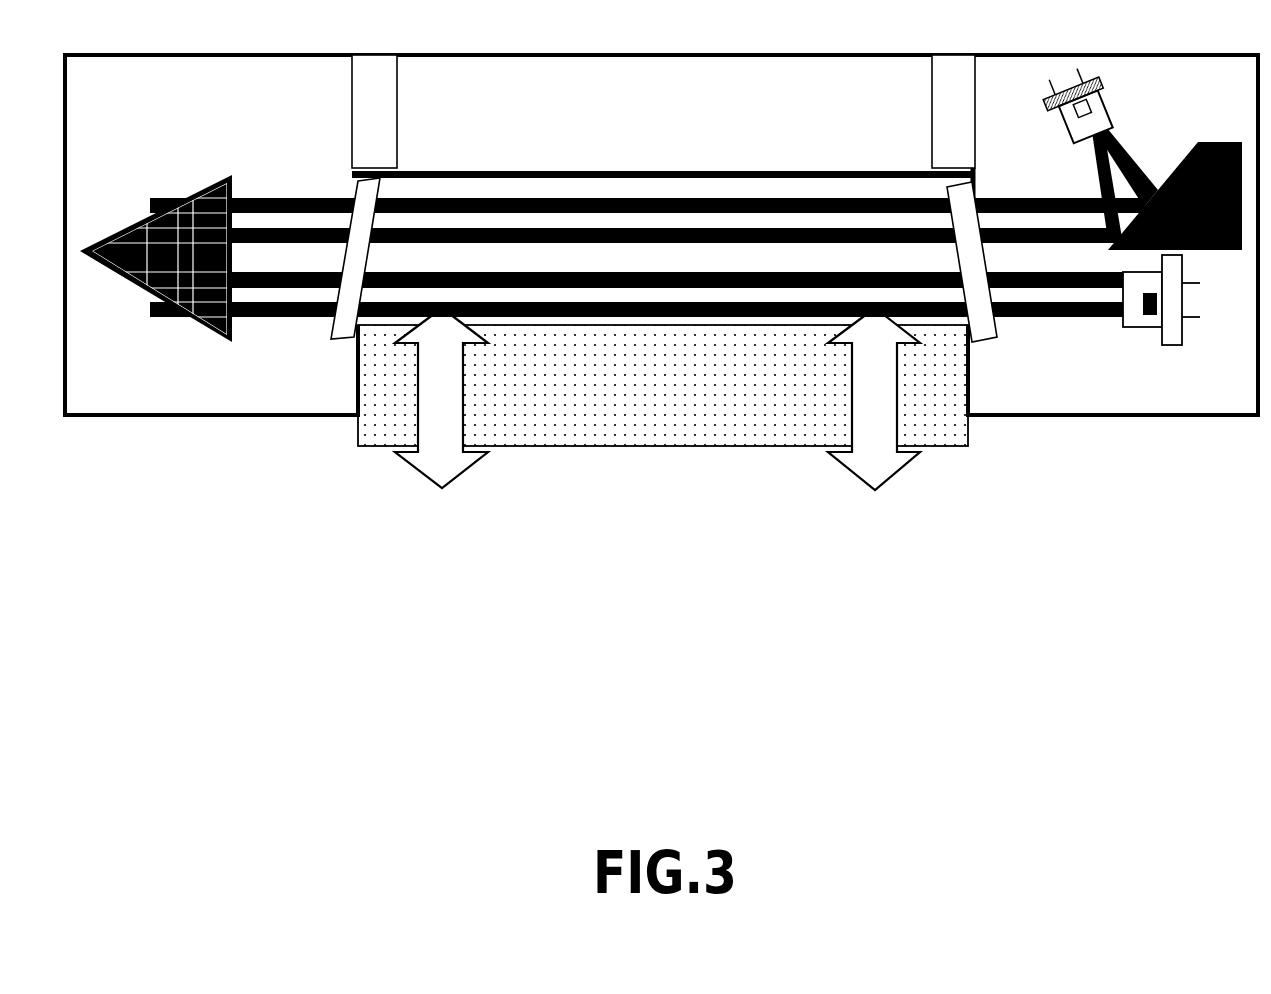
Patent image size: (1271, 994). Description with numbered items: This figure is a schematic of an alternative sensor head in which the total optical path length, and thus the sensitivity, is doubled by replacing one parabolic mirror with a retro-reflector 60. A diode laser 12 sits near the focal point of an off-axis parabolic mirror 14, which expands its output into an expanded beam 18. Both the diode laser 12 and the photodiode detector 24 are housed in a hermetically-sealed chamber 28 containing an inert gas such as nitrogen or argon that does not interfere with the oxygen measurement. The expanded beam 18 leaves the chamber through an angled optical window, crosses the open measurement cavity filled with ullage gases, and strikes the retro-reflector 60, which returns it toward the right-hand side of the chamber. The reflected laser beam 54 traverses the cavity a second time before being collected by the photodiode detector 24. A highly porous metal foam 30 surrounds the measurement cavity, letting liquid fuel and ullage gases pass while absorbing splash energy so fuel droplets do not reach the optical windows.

The diode laser 12 is at (1067, 132).
The off-axis parabolic mirror 14 is at (1228, 140).
The expanded beam 18 is at (307, 197).
The photodiode detector 24 is at (1138, 328).
The hermetically-sealed chamber 28 is at (664, 198).
The metal foam 30 is at (663, 438).
The reflected laser beam 54 is at (277, 317).
The retro-reflector 60 is at (155, 208).